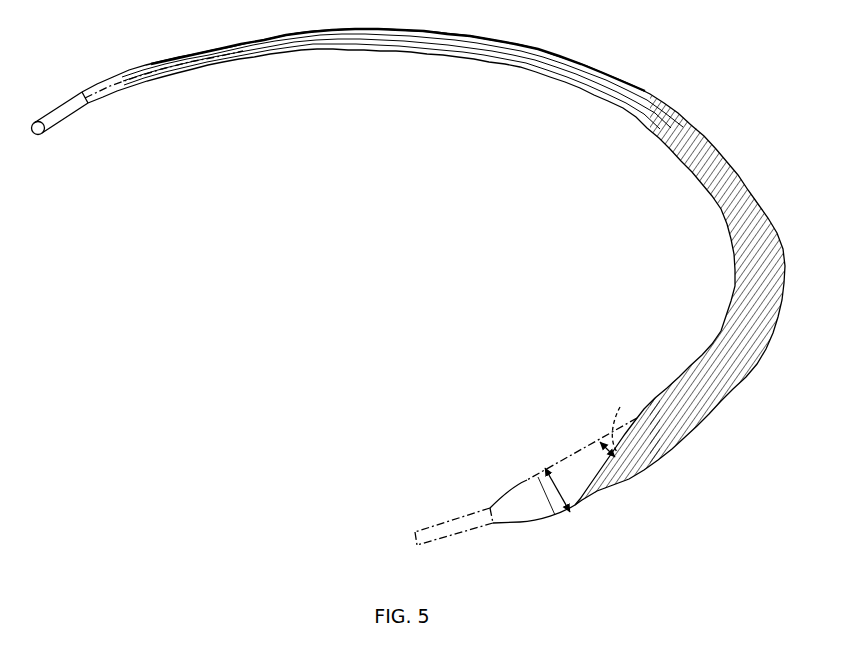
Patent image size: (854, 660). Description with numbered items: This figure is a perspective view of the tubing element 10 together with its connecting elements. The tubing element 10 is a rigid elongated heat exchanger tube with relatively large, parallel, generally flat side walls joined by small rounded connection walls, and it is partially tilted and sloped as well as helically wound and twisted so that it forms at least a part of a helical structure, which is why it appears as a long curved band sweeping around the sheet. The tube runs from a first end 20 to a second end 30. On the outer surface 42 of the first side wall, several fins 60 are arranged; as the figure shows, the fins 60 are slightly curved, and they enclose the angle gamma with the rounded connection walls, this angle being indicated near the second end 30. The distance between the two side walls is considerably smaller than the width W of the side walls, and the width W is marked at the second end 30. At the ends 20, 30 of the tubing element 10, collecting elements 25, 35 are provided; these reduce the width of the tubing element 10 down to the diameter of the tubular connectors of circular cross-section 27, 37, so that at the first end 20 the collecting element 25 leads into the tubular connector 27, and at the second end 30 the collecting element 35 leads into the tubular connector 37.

The tubing element 10 is at (416, 298).
The first end 20 is at (128, 83).
The collecting element 25 is at (95, 88).
The tubular connector of circular cross-section 27 is at (60, 117).
The second end 30 is at (553, 515).
The collecting element 35 is at (525, 507).
The tubular connector of circular cross-section 37 is at (447, 532).
The outer surface of the first side wall 42 is at (128, 75).
The fins 60 is at (540, 52).